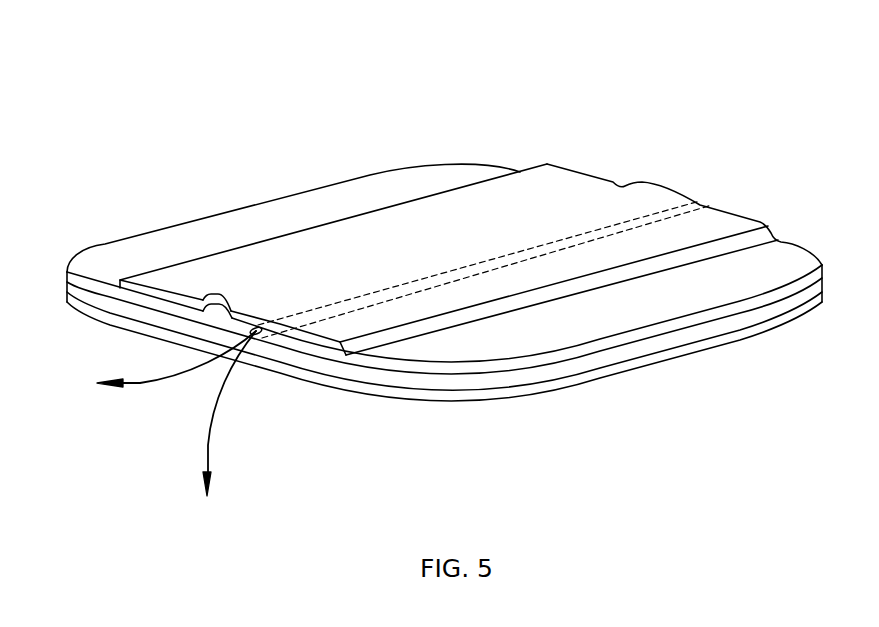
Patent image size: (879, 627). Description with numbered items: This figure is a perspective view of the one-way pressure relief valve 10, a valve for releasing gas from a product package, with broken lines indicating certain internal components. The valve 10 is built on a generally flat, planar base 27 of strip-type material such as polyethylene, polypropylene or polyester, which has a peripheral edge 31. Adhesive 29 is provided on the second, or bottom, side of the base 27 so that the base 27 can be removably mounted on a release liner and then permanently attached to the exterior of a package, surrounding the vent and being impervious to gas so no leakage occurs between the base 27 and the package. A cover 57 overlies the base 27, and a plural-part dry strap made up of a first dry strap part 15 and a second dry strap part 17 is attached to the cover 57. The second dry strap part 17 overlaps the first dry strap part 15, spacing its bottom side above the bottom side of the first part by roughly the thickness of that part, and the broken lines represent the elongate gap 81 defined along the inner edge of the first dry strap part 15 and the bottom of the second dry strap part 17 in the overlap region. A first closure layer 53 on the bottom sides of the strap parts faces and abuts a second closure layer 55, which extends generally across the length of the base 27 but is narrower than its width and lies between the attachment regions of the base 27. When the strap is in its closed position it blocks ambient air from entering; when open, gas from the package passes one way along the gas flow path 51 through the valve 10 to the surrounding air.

The one-way pressure relief valve 10 is at (232, 103).
The first dry strap part 15 is at (150, 302).
The second dry strap part 17 is at (235, 313).
The base 27 is at (677, 337).
The adhesive 29 is at (437, 400).
The peripheral edge 31 is at (320, 367).
The gas flow path 51 is at (160, 433).
The first closure layer 53 is at (222, 322).
The second closure layer 55 is at (168, 313).
The cover 57 is at (587, 203).
The elongate gap 81 is at (407, 292).